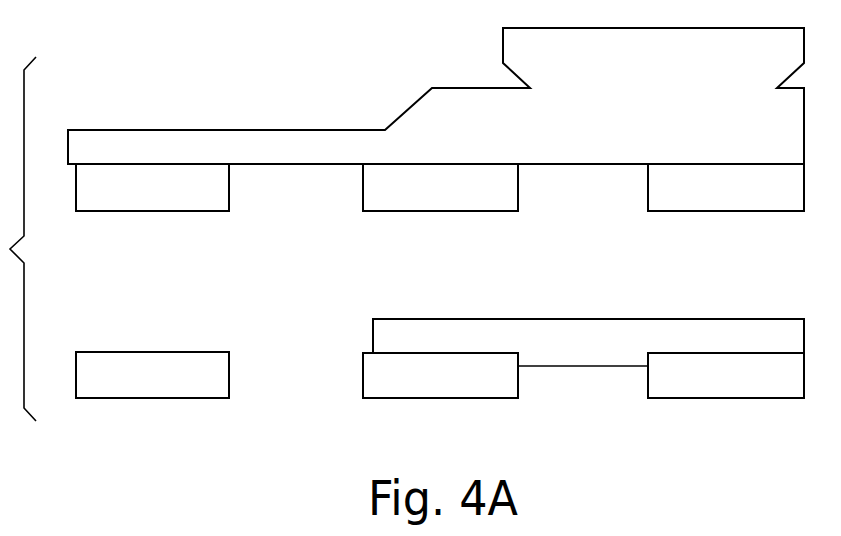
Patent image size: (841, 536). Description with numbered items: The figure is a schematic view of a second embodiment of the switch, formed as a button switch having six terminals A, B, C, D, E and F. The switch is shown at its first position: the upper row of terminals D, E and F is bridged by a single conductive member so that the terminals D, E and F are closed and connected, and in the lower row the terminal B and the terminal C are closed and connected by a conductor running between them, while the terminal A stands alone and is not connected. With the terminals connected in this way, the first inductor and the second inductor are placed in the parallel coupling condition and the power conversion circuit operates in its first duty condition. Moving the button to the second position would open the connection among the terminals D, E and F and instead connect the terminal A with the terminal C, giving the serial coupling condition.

The terminal A is at (152, 396).
The terminal B is at (726, 397).
The terminal C is at (440, 397).
The terminal D is at (152, 211).
The terminal E is at (440, 211).
The terminal F is at (726, 211).